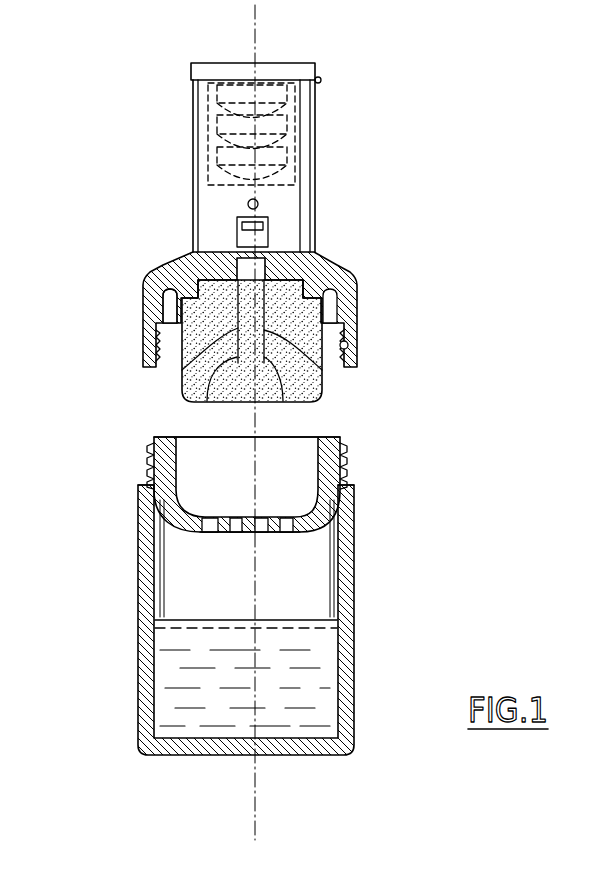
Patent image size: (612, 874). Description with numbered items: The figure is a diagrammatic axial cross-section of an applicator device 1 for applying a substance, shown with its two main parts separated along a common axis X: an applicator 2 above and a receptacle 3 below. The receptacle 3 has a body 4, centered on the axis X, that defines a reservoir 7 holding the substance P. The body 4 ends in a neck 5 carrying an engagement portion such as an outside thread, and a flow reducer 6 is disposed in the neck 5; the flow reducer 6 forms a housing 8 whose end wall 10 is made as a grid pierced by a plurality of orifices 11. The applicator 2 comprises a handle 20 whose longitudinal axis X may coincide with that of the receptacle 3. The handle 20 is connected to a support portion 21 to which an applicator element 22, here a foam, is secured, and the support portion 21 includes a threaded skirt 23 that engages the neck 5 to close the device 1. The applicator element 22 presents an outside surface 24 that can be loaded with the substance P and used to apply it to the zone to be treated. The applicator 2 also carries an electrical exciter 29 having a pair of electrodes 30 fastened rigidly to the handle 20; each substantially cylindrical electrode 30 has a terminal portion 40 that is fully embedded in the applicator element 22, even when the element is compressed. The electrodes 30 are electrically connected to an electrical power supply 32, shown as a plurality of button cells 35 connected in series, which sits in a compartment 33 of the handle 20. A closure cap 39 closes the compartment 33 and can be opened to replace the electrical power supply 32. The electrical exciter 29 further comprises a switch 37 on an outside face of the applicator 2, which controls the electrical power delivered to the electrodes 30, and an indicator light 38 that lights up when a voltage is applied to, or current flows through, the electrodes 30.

The applicator device 1 is at (423, 323).
The applicator 2 is at (343, 252).
The receptacle 3 is at (357, 660).
The body 4 is at (147, 587).
The neck 5 is at (147, 455).
The flow reducer 6 is at (318, 508).
The reservoir 7 is at (313, 587).
The housing 8 is at (307, 457).
The end wall 10 is at (170, 517).
The orifices 11 is at (272, 517).
The handle 20 is at (192, 172).
The support portion 21 is at (188, 292).
The applicator element 22 is at (183, 378).
The threaded skirt 23 is at (358, 357).
The outside surface 24 is at (232, 403).
The electrical exciter 29 is at (279, 320).
The electrodes 30 is at (182, 370).
The electrical power supply 32 is at (282, 125).
The compartment 33 is at (296, 180).
The button cells 35 is at (221, 104).
The switch 37 is at (268, 237).
The indicator light 38 is at (247, 205).
The closure cap 39 is at (207, 72).
The terminal portion 40 is at (207, 400).
The substance P is at (172, 677).
The axis X is at (245, 813).